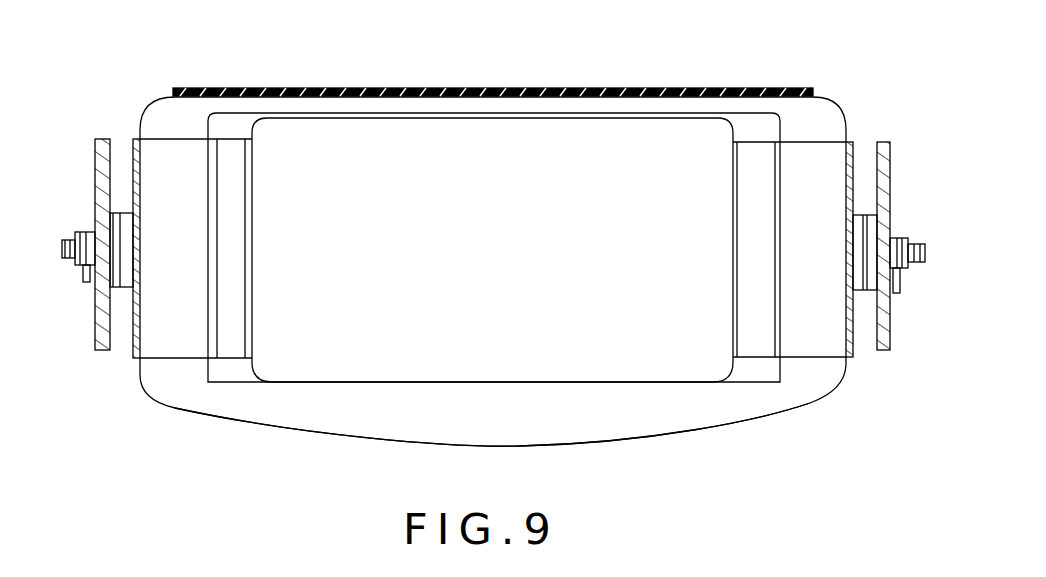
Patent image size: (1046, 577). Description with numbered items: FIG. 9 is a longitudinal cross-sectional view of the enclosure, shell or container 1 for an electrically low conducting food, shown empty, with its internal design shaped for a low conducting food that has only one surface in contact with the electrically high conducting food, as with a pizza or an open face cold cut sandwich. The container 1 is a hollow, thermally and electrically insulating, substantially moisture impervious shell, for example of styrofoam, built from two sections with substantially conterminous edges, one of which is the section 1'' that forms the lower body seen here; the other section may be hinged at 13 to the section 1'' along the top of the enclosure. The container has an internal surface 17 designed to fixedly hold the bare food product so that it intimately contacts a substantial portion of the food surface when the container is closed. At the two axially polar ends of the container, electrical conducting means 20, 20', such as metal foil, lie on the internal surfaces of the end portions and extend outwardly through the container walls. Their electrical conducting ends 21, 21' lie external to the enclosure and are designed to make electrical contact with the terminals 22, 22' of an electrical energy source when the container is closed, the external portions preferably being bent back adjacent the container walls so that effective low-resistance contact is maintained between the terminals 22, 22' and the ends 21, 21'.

The container 1 is at (514, 250).
The container section 1'' is at (492, 435).
The hinge 13 is at (413, 88).
The internal surface 17 is at (506, 226).
The electrical conducting means 20 is at (196, 248).
The electrical conducting means 20' is at (789, 249).
The electrical conducting end 21 is at (120, 224).
The electrical conducting end 21' is at (822, 249).
The terminal 22 is at (90, 244).
The terminal 22' is at (899, 246).